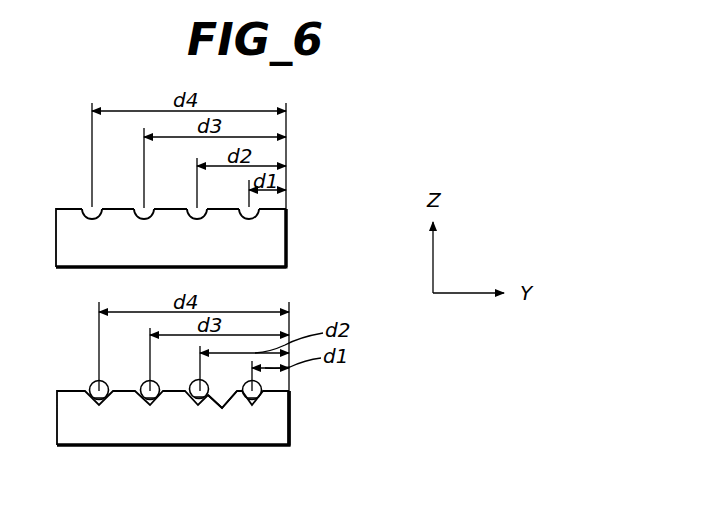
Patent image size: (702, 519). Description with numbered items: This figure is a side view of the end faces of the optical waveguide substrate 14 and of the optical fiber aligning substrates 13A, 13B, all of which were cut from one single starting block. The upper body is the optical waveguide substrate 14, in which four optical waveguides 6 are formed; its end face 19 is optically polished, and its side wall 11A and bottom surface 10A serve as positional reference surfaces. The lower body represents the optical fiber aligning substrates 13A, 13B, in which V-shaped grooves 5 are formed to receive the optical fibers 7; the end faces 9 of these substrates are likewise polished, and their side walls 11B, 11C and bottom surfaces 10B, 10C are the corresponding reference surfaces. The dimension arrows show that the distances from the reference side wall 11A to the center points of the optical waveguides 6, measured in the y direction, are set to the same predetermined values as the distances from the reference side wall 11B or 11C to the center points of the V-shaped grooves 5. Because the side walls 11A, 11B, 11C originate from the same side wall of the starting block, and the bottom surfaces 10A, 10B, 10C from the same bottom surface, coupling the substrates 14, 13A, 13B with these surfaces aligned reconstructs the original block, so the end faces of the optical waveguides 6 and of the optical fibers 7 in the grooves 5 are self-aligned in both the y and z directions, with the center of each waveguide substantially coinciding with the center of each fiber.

The V-shaped grooves 5 is at (152, 387).
The optical waveguides 6 is at (197, 209).
The optical fibers 7 is at (222, 408).
The end faces of the optical fiber aligning substrates 9 is at (273, 438).
The bottom surface of the main body of the optical waveguide substrate 10A is at (213, 268).
The bottom surface of the main body of the optical fiber aligning substrate 10B is at (173, 440).
The bottom surface of the main body of the optical fiber aligning substrate 10C is at (208, 446).
The side wall of the main body of the optical waveguide substrate 11A is at (288, 229).
The side wall of the main body of the optical fiber aligning substrate 11B is at (348, 418).
The side wall of the main body of the optical fiber aligning substrate 11C is at (291, 418).
The optical fiber aligning substrate 13A is at (343, 385).
The optical fiber aligning substrate 13B is at (301, 390).
The optical waveguide substrate 14 is at (282, 201).
The end faces 19 is at (277, 252).